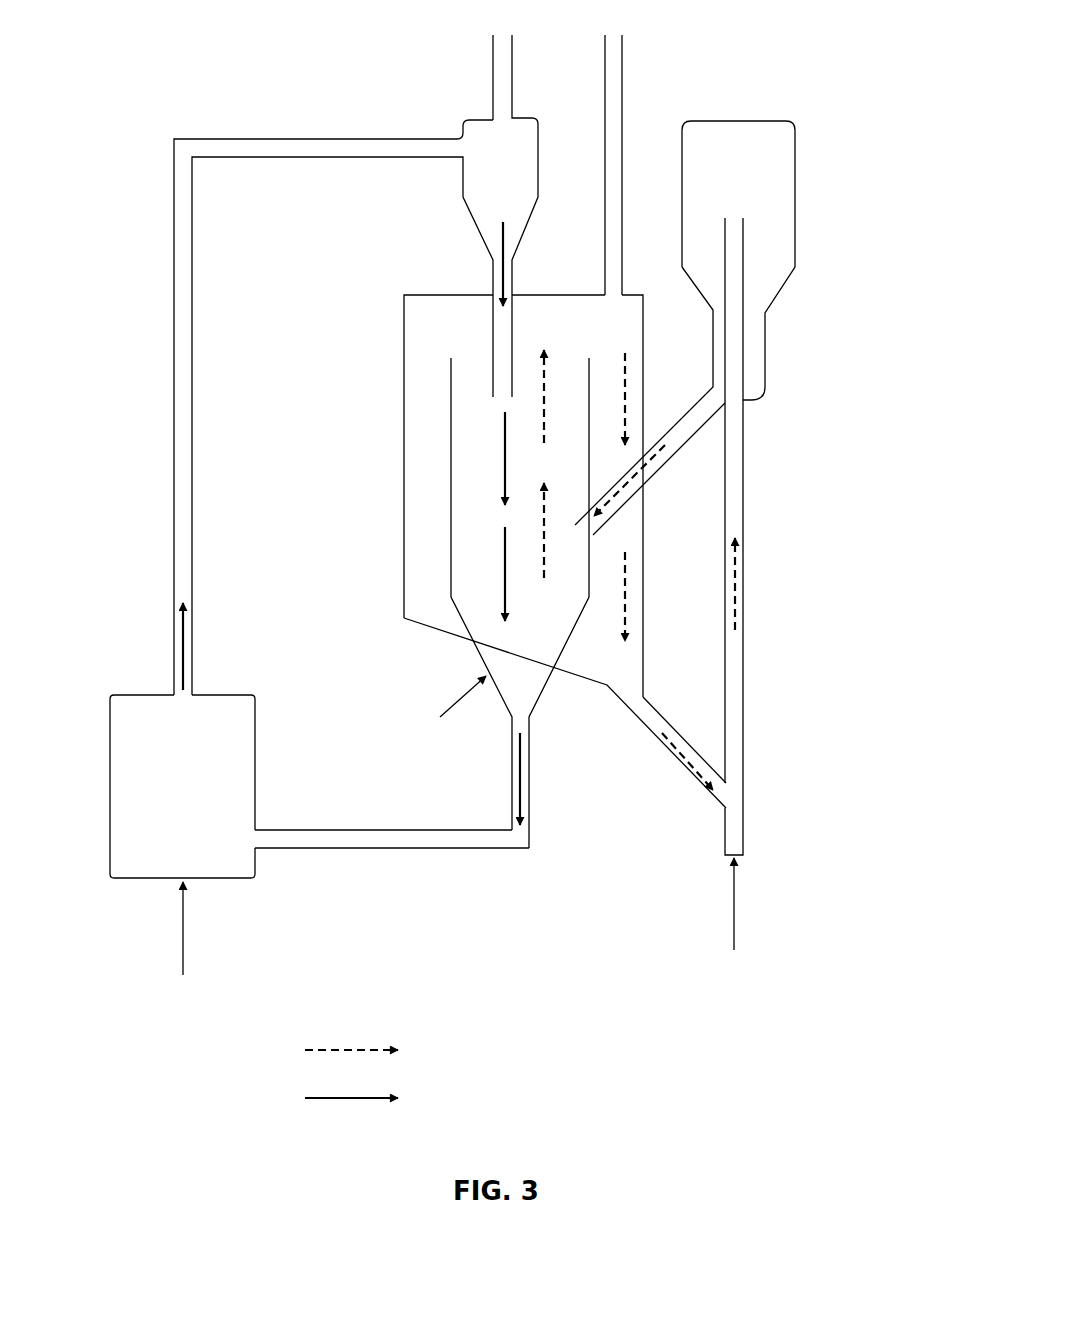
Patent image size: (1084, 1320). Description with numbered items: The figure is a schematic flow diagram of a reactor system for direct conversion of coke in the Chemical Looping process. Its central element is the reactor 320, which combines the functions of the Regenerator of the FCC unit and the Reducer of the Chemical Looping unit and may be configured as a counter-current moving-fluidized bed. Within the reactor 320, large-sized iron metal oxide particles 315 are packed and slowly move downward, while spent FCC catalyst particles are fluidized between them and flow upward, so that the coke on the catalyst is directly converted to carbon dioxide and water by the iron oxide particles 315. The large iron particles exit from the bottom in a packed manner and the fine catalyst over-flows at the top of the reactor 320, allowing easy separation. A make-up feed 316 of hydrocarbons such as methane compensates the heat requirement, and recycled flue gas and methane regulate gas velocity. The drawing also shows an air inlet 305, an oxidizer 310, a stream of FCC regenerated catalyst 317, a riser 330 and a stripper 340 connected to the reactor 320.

The air inlet 305 is at (190, 922).
The oxidizer 310 is at (203, 797).
The iron metal oxide particles 315 is at (496, 468).
The make-up feed 316 is at (435, 712).
The FCC regenerated catalyst stream 317 is at (553, 411).
The reactor 320 is at (388, 415).
The riser 330 is at (755, 609).
The stripper 340 is at (772, 314).